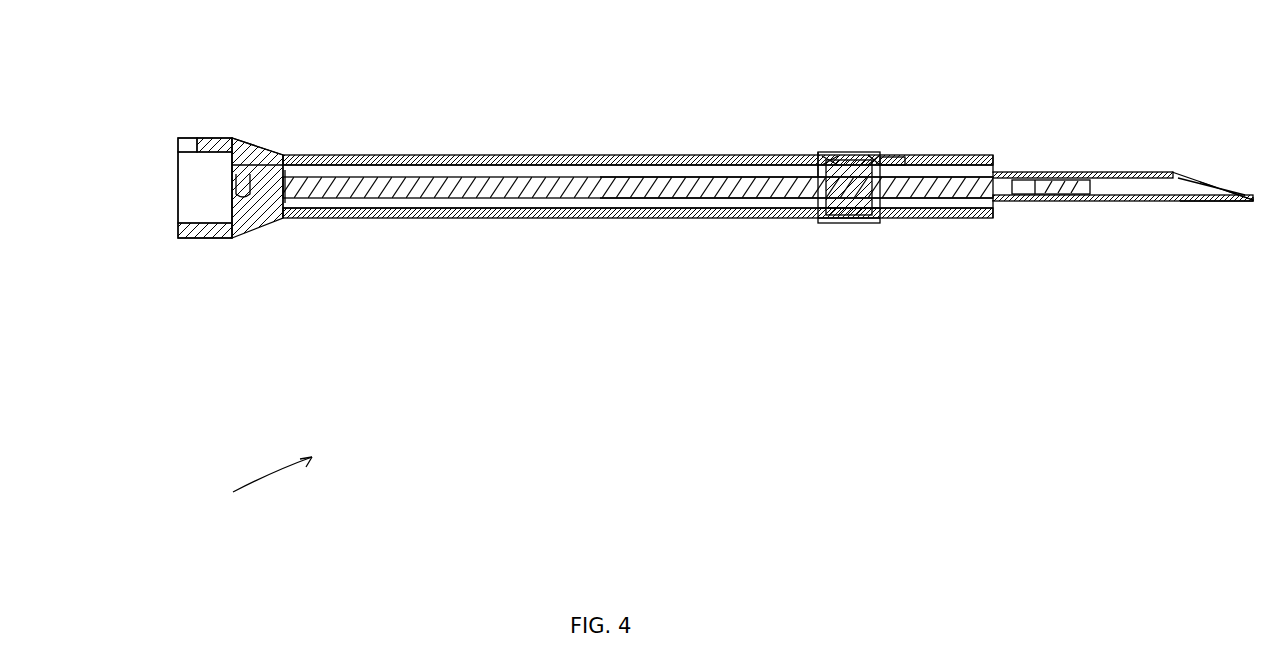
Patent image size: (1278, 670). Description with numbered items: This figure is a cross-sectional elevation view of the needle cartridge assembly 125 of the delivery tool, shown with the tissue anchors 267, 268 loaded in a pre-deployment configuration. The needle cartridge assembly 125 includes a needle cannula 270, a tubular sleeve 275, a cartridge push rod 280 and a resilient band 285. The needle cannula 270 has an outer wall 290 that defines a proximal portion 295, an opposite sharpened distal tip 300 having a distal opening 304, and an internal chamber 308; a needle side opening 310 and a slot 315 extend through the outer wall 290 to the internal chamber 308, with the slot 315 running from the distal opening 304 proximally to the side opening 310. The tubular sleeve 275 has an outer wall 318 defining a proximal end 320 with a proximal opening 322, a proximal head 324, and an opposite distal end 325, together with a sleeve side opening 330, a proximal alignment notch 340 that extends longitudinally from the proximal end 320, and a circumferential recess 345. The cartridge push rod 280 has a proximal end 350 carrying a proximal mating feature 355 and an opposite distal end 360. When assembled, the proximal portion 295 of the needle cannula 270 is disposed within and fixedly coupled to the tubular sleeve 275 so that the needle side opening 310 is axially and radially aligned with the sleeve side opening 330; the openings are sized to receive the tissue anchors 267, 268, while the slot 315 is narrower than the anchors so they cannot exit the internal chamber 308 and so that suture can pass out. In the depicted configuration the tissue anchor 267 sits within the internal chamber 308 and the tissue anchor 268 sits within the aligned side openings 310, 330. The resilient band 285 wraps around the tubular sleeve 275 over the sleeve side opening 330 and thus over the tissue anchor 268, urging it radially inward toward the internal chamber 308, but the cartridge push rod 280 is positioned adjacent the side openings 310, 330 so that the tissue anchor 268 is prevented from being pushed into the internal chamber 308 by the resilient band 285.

The needle cartridge assembly 125 is at (242, 486).
The tissue anchor 267 is at (876, 155).
The tissue anchor 268 is at (1028, 172).
The needle cannula 270 is at (1150, 203).
The tubular sleeve 275 is at (620, 220).
The cartridge push rod 280 is at (545, 155).
The resilient band 285 is at (852, 223).
The outer wall 290 is at (1022, 203).
The proximal portion 295 is at (673, 220).
The sharpened distal tip 300 is at (1248, 203).
The distal opening 304 is at (1220, 190).
The internal chamber 308 is at (1120, 200).
The needle side opening 310 is at (827, 155).
The slot 315 is at (796, 350).
The outer wall 318 is at (480, 220).
The proximal end 320 is at (178, 238).
The proximal opening 322 is at (183, 200).
The proximal head 324 is at (205, 240).
The distal end 325 is at (1198, 168).
The sleeve side opening 330 is at (905, 155).
The proximal alignment notch 340 is at (178, 138).
The circumferential recess 345 is at (818, 155).
The proximal end 350 is at (297, 155).
The proximal mating feature 355 is at (289, 220).
The distal end 360 is at (870, 275).